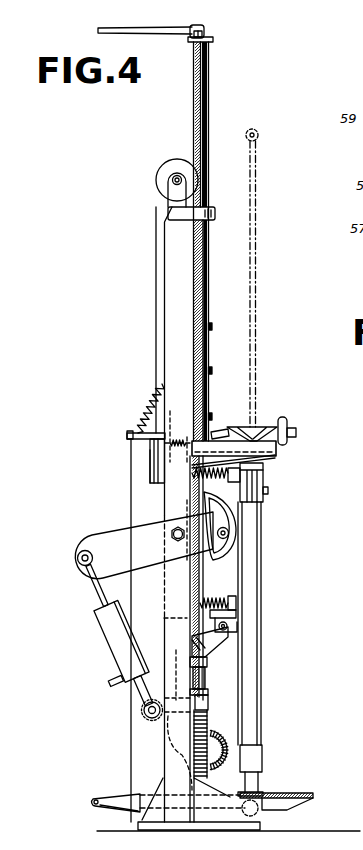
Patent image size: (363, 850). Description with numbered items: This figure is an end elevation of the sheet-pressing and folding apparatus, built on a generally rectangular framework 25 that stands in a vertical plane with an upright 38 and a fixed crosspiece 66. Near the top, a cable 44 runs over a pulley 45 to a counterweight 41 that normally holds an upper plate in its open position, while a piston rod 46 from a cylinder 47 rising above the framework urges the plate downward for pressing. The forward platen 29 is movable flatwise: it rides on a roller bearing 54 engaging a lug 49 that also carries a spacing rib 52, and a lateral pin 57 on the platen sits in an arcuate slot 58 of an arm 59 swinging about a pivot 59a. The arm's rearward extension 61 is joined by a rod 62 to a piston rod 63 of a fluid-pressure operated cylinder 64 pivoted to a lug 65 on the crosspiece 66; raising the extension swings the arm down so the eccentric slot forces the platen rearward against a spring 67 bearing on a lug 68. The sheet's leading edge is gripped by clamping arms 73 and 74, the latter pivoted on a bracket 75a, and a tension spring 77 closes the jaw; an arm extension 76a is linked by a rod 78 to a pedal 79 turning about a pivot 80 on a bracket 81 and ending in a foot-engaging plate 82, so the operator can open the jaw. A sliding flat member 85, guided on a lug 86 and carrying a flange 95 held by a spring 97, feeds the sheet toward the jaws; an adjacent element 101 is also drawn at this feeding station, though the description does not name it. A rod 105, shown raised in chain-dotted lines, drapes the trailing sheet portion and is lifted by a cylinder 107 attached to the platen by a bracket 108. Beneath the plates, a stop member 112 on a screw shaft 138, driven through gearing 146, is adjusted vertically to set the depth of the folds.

The framework 25 is at (158, 277).
The platen 29 is at (223, 572).
The upright 38 is at (172, 314).
The counterweight 41 is at (148, 481).
The cable 44 is at (155, 211).
The pulley 45 is at (176, 166).
The piston rod 46 is at (206, 246).
The cylinder 47 is at (209, 97).
The lug 49 is at (230, 641).
The spacing rib 52 is at (208, 657).
The roller bearing 54 is at (228, 628).
The pin 57 is at (236, 538).
The arcuate slot 58 is at (237, 528).
The arm 59 is at (157, 523).
The pivot 59a is at (178, 541).
The rearward extension 61 is at (98, 538).
The rod 62 is at (78, 563).
The piston rod 63 is at (95, 585).
The fluid-pressure operated cylinder 64 is at (108, 629).
The lug 65 is at (150, 722).
The crosspiece 66 is at (179, 720).
The spring 67 is at (230, 599).
The lug 68 is at (237, 604).
The arm 73 is at (178, 433).
The arm 74 is at (176, 432).
The bracket 75a is at (204, 469).
The arm extension 76a is at (152, 447).
The tension spring 77 is at (143, 418).
The rod 78 is at (132, 479).
The pedal 79 is at (138, 800).
The pivot 80 is at (92, 803).
The bracket 81 is at (135, 811).
The foot-engaging plate 82 is at (297, 793).
The flat member 85 is at (280, 452).
The lug 86 is at (272, 462).
The flange 95 is at (254, 437).
The spring 97 is at (297, 436).
The roller 101 is at (289, 426).
The rod 105 is at (258, 136).
The cylinder 107 is at (256, 555).
The bracket 108 is at (270, 491).
The stop member 112 is at (208, 676).
The screw shaft 138 is at (216, 741).
The gearing 146 is at (262, 752).